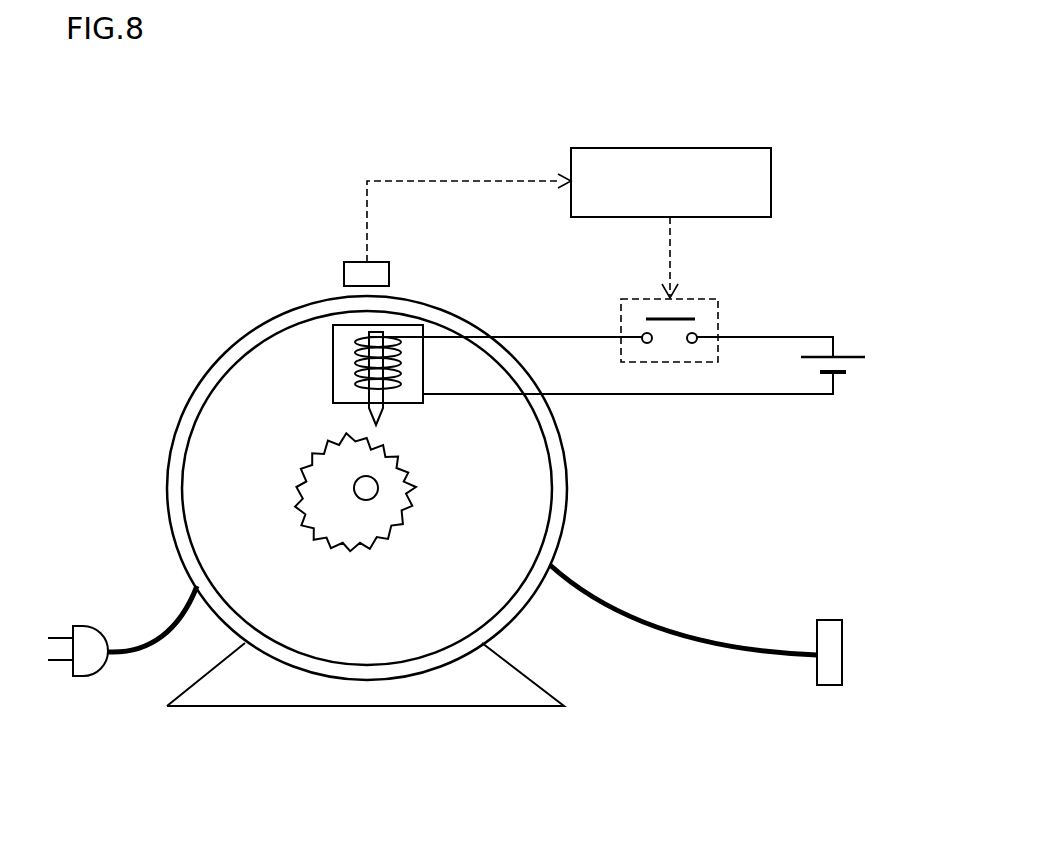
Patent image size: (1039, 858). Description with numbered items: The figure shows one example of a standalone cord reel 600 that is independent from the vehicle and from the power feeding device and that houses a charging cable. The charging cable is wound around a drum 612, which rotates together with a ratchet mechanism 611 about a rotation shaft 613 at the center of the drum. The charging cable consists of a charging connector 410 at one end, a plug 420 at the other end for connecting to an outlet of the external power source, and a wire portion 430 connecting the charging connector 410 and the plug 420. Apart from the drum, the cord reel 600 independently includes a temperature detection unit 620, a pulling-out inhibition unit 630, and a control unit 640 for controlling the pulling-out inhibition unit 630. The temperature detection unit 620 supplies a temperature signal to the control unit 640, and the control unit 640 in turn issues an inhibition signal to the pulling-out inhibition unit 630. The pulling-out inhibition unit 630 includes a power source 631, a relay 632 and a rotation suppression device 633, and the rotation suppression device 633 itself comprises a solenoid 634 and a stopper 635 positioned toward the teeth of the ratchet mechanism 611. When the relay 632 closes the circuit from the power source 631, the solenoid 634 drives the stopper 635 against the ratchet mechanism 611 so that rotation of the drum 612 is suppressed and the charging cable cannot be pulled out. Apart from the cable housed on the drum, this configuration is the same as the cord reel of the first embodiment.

The cord reel 600 is at (163, 131).
The ratchet mechanism 611 is at (320, 480).
The drum 612 is at (185, 547).
The rotation shaft 613 is at (370, 500).
The temperature detection unit 620 is at (376, 262).
The pulling-out inhibition unit 630 is at (638, 332).
The power source 631 is at (848, 357).
The relay 632 is at (710, 299).
The rotation suppression device 633 is at (362, 376).
The solenoid 634 is at (355, 354).
The stopper 635 is at (380, 423).
The control unit 640 is at (728, 148).
The charging connector 410 is at (830, 686).
The plug 420 is at (84, 676).
The wire portion 430 is at (697, 645).